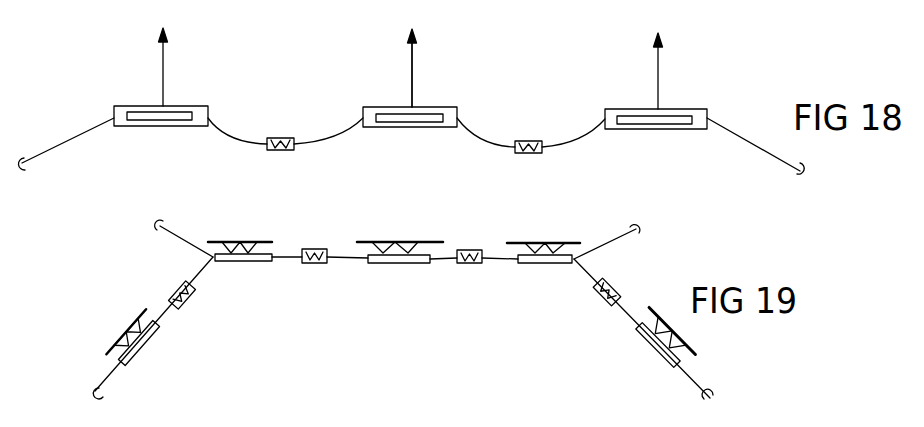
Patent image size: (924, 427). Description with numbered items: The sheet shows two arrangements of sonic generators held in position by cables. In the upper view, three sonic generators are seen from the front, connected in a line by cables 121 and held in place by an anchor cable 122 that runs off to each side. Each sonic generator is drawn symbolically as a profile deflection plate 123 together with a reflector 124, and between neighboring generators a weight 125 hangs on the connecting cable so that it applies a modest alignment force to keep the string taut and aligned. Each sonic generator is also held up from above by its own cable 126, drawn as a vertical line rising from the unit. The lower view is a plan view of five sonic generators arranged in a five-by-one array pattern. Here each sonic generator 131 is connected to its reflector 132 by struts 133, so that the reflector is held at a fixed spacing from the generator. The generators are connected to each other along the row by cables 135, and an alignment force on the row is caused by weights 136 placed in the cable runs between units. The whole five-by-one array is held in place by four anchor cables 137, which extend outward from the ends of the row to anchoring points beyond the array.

In FIG. 18, the cable 121 is at (237, 132).
In FIG. 18, the anchor cable 122 is at (739, 140).
In FIG. 18, the profile deflection plate 123 is at (186, 111).
In FIG. 18, the reflector 124 is at (137, 127).
In FIG. 18, the weight 125 is at (288, 152).
In FIG. 18, the cable 126 is at (413, 80).
In FIG. 19, the sonic generator 131 is at (243, 262).
In FIG. 19, the reflector 132 is at (243, 245).
In FIG. 19, the strut 133 is at (262, 251).
In FIG. 19, the cable 135 is at (340, 259).
In FIG. 19, the weight 136 is at (462, 264).
In FIG. 19, the anchor cable 137 is at (678, 368).